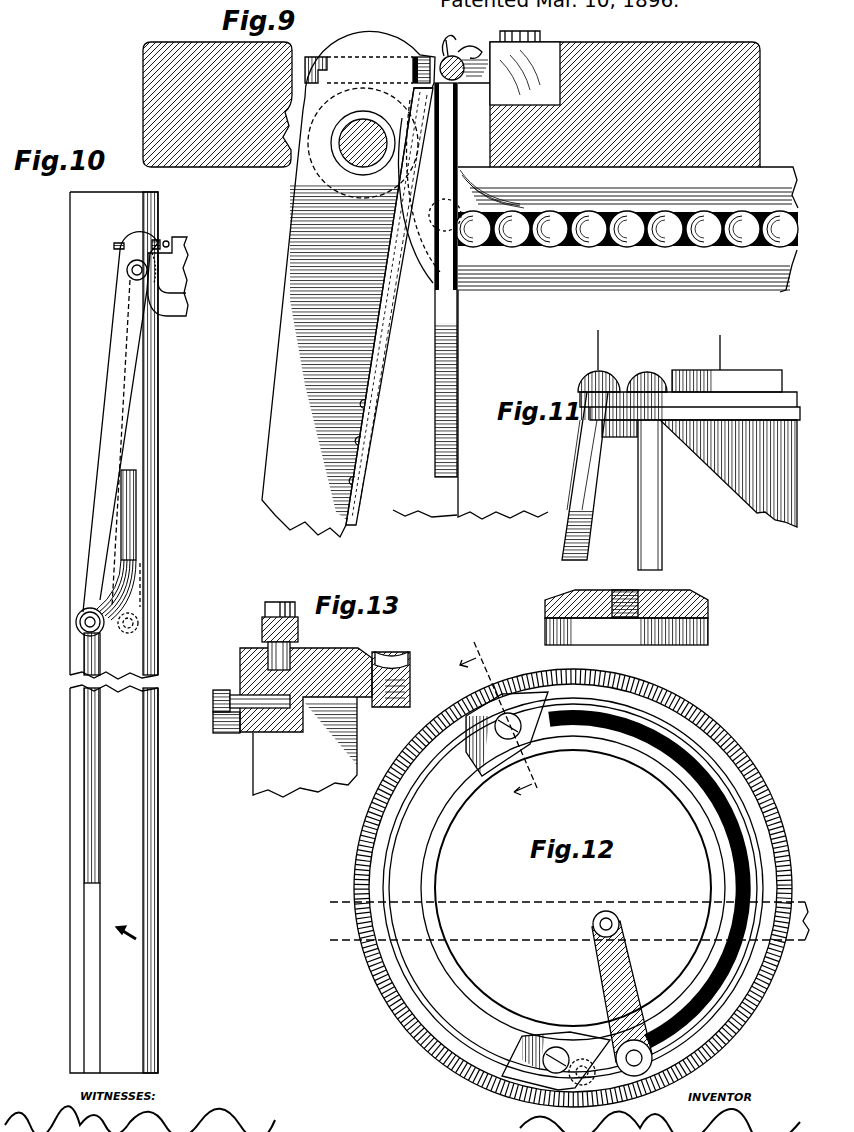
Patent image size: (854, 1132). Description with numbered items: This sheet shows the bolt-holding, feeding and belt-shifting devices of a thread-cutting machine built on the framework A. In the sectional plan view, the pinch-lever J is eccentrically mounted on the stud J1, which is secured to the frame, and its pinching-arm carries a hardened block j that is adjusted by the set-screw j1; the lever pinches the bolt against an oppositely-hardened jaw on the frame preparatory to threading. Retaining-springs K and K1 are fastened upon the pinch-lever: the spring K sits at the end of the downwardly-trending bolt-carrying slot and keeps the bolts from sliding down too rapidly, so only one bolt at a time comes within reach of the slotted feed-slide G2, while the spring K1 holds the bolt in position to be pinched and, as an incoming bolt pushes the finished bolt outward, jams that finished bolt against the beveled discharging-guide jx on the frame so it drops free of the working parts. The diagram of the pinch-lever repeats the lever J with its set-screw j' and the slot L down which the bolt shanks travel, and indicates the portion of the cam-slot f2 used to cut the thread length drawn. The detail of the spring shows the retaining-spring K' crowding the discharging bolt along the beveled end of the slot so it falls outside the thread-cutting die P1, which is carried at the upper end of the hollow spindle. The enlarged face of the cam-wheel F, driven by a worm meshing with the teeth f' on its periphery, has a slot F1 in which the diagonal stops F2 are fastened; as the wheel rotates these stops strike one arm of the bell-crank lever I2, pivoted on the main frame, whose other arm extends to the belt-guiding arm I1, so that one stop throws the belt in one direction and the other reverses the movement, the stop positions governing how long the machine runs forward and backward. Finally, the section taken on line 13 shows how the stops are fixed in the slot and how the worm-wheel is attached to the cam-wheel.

In FIG. 9, the framework A is at (470, 275).
In FIG. 9, the pinch-lever J is at (361, 284).
In FIG. 10, the pinch-lever J is at (130, 272).
In FIG. 13, the pinch-lever J is at (262, 626).
In FIG. 9, the eccentric stud J1 is at (363, 143).
In FIG. 9, the hardened block j is at (446, 44).
In FIG. 10, the hardened block j is at (160, 229).
In FIG. 9, the set-screw j1 is at (327, 57).
In FIG. 9, the beveled discharging-guide jx is at (460, 55).
In FIG. 9, the feed-slide G2 is at (448, 163).
In FIG. 11, the feed-slide G2 is at (733, 470).
In FIG. 9, the retaining-spring K is at (389, 306).
In FIG. 11, the retaining-spring K is at (690, 455).
In FIG. 9, the retaining-spring K1 is at (374, 330).
In FIG. 11, the retaining-spring K' is at (581, 465).
In FIG. 9, the slot L is at (757, 262).
In FIG. 10, the slot L is at (180, 298).
In FIG. 10, the cam-wheel F is at (114, 632).
In FIG. 13, the cam-wheel F is at (306, 722).
In FIG. 12, the cam-wheel F is at (432, 863).
In FIG. 12, the slot F1 is at (428, 818).
In FIG. 13, the diagonal stop F2 is at (215, 700).
In FIG. 12, the diagonal stop F2 is at (518, 1108).
In FIG. 13, the teeth f' is at (391, 663).
In FIG. 10, the cam-slot f2 is at (113, 924).
In FIG. 10, the set-screw j' is at (115, 232).
In FIG. 11, the thread-cutting die P1 is at (660, 598).
In FIG. 12, the reciprocating arm I1 is at (569, 921).
In FIG. 12, the bell-crank lever I2 is at (636, 978).
In FIG. 12, the section line 13 is at (507, 718).